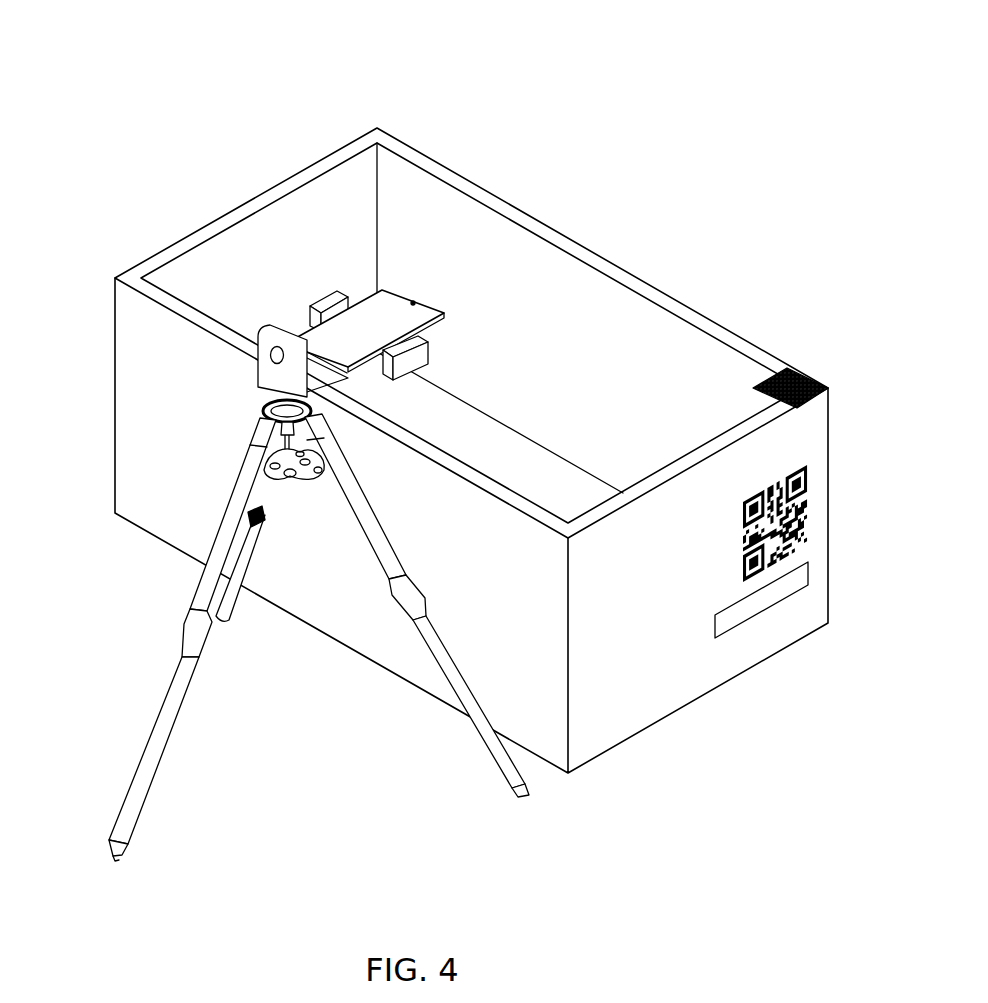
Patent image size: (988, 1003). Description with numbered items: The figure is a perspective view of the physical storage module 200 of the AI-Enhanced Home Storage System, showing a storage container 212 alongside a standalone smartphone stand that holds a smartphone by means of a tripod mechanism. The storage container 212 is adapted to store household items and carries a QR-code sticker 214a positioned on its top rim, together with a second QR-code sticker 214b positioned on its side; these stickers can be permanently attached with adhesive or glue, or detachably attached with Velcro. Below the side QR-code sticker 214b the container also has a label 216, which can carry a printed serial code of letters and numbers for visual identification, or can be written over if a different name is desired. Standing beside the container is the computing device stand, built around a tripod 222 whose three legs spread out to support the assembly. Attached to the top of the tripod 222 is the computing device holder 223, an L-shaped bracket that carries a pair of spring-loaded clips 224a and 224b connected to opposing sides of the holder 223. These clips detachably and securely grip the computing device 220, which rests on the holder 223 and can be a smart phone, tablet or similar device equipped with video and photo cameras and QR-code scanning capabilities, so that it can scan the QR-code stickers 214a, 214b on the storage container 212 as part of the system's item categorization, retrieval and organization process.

The physical storage module 200 is at (133, 66).
The storage container 212 is at (547, 226).
The QR-code sticker 214a is at (800, 373).
The QR-code sticker 214b is at (807, 500).
The label 216 is at (808, 573).
The computing device 220 is at (397, 318).
The tripod 222 is at (158, 726).
The computing device holder 223 is at (267, 370).
The spring-loaded clip 224a is at (413, 355).
The spring-loaded clip 224b is at (323, 295).